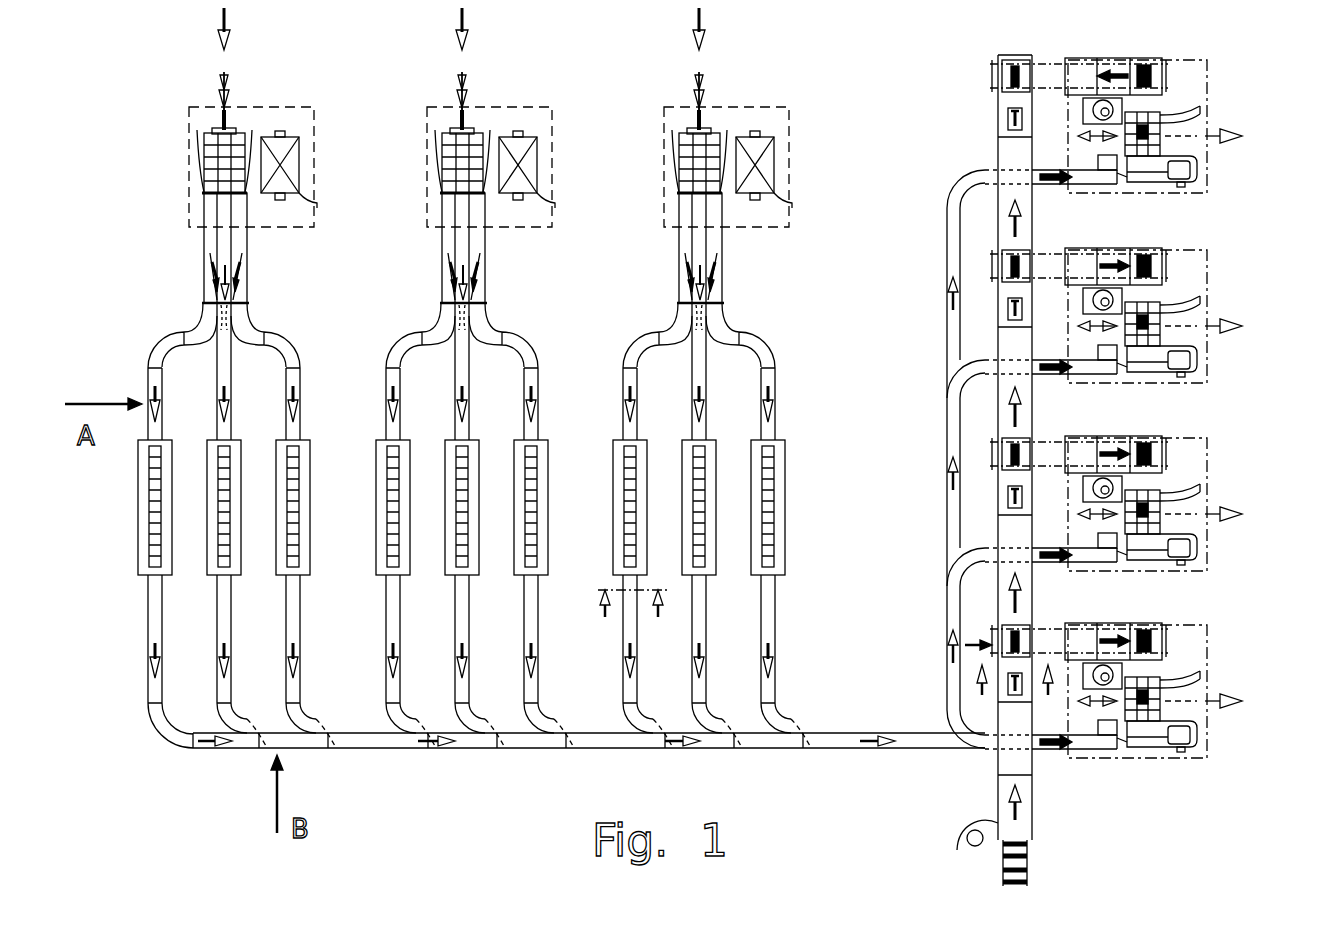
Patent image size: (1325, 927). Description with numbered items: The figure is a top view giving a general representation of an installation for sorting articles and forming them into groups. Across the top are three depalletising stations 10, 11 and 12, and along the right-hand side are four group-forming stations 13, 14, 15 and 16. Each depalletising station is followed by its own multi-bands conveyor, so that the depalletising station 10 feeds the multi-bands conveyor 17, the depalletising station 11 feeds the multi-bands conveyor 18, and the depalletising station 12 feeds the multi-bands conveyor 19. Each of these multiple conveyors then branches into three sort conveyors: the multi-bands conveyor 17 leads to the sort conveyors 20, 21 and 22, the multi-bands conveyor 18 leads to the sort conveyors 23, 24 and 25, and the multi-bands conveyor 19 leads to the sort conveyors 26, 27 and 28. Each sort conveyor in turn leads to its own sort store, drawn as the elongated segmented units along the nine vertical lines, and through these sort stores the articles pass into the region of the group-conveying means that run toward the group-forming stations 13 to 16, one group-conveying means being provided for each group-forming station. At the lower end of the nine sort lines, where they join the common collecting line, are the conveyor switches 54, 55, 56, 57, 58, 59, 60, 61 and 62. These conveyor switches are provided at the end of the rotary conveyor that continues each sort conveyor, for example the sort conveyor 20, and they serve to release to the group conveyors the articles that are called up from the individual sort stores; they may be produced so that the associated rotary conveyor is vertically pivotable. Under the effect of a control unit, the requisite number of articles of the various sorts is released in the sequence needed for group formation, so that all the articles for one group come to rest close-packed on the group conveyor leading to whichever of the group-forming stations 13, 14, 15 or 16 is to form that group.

The depalletising station 10 is at (272, 90).
The depalletising station 11 is at (467, 90).
The depalletising station 12 is at (702, 90).
The group-forming station 13 is at (1246, 652).
The group-forming station 14 is at (1246, 460).
The group-forming station 15 is at (1246, 281).
The group-forming station 16 is at (1240, 103).
The multi-bands conveyor 17 is at (247, 245).
The multi-bands conveyor 18 is at (485, 245).
The multi-bands conveyor 19 is at (722, 245).
The sort conveyor 20 is at (160, 343).
The sort conveyor 21 is at (231, 365).
The sort conveyor 22 is at (286, 345).
The sort conveyor 23 is at (398, 343).
The sort conveyor 24 is at (469, 365).
The sort conveyor 25 is at (530, 345).
The sort conveyor 26 is at (640, 343).
The sort conveyor 27 is at (706, 365).
The sort conveyor 28 is at (764, 345).
The conveyor switch 54 is at (178, 752).
The conveyor switch 55 is at (256, 752).
The conveyor switch 56 is at (333, 752).
The conveyor switch 57 is at (421, 752).
The conveyor switch 58 is at (495, 752).
The conveyor switch 59 is at (560, 752).
The conveyor switch 60 is at (658, 752).
The conveyor switch 61 is at (730, 752).
The conveyor switch 62 is at (794, 752).